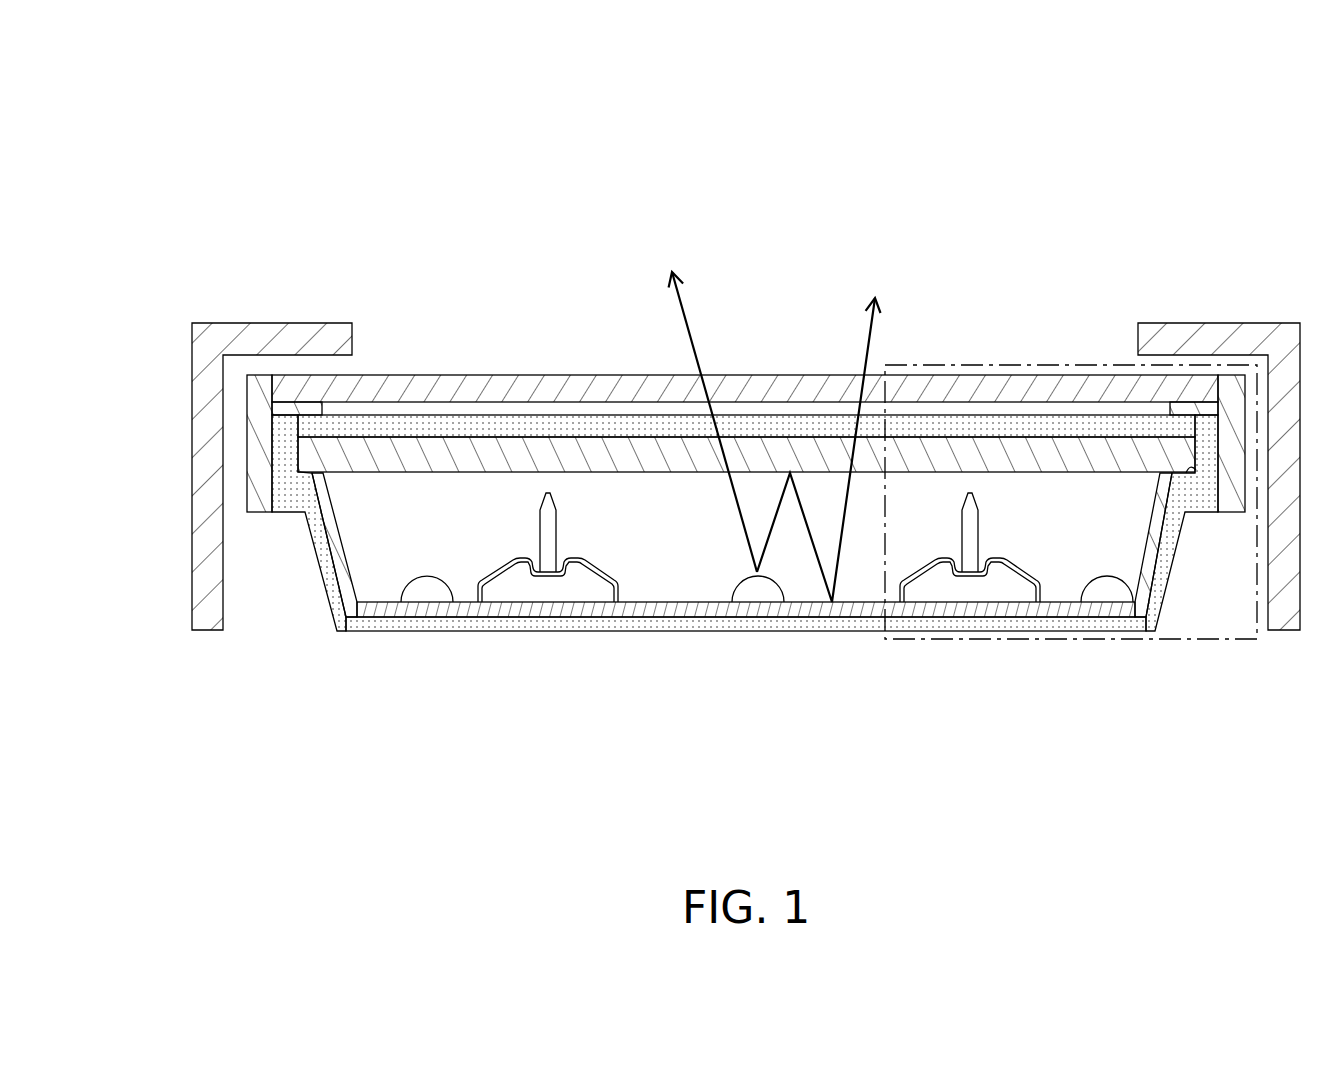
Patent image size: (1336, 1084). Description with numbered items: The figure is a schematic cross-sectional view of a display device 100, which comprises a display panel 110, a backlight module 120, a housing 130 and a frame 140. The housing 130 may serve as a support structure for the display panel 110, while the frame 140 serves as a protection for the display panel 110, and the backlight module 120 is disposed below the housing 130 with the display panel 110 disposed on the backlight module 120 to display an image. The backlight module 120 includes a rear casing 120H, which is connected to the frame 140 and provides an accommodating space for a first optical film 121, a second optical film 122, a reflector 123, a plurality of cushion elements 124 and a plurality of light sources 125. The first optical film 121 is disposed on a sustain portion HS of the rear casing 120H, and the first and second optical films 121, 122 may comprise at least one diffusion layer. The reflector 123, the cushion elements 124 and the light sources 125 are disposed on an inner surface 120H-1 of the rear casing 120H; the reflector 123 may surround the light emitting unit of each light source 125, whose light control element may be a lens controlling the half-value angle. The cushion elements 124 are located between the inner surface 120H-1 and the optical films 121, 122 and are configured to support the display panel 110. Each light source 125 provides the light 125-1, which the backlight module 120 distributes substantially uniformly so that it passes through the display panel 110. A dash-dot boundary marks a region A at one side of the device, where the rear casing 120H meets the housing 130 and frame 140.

The display device 100 is at (148, 105).
The display panel 110 is at (453, 385).
The backlight module 120 is at (717, 613).
The rear casing 120H is at (708, 623).
The inner surface 120H-1 is at (635, 620).
The first optical film 121 is at (642, 453).
The second optical film 122 is at (557, 425).
The reflector 123 is at (460, 617).
The cushion elements 124 is at (550, 593).
The light sources 125 is at (760, 597).
The light 125-1 is at (822, 690).
The housing 130 is at (1233, 503).
The frame 140 is at (1287, 618).
The region A is at (1020, 365).
The sustain portion HS is at (1193, 478).